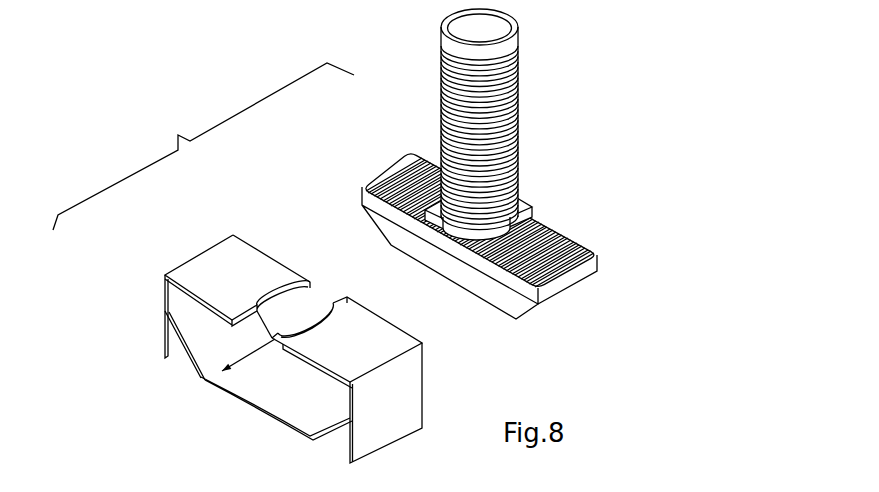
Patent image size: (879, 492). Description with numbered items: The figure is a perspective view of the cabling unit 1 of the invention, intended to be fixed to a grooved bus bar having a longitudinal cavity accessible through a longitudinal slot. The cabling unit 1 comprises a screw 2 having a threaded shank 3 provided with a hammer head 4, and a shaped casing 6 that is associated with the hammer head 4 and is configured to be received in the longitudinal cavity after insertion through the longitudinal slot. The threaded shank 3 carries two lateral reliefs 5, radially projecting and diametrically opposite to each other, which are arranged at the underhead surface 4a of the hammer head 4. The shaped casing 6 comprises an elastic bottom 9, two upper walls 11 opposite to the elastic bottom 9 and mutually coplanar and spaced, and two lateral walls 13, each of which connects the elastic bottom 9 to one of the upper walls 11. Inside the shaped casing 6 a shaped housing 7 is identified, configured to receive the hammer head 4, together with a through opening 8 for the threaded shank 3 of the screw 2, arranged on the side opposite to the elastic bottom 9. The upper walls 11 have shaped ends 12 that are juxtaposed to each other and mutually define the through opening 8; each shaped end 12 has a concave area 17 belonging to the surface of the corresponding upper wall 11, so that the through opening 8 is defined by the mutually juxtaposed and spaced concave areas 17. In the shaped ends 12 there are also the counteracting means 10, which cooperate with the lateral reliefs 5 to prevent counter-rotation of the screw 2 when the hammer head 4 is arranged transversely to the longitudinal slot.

The cabling unit 1 is at (178, 136).
The screw 2 is at (471, 164).
The threaded shank 3 is at (500, 63).
The hammer head 4 is at (471, 236).
The underhead surface 4a is at (545, 253).
The lateral reliefs 5 is at (388, 196).
The shaped casing 6 is at (275, 335).
The shaped housing 7 is at (216, 373).
The through opening 8 is at (295, 308).
The elastic bottom 9 is at (258, 411).
The counteracting means 10 is at (278, 354).
The upper walls 11 is at (190, 295).
The shaped ends 12 is at (302, 283).
The lateral walls 13 is at (393, 380).
The concave areas 17 is at (268, 292).